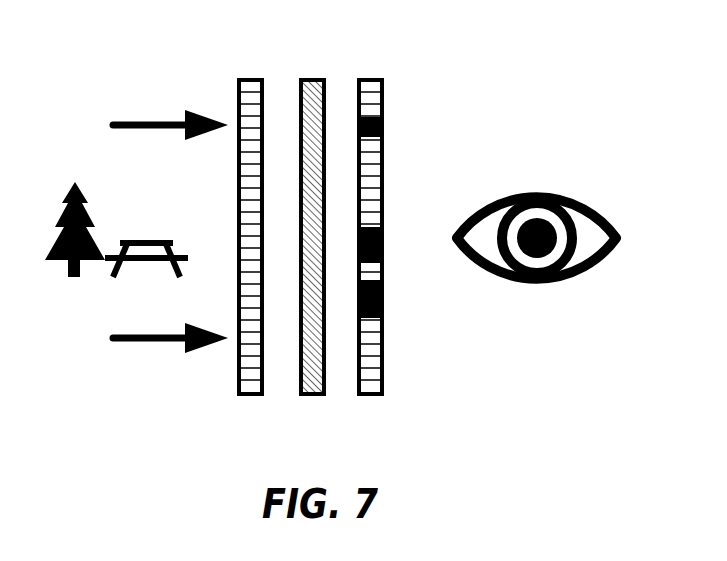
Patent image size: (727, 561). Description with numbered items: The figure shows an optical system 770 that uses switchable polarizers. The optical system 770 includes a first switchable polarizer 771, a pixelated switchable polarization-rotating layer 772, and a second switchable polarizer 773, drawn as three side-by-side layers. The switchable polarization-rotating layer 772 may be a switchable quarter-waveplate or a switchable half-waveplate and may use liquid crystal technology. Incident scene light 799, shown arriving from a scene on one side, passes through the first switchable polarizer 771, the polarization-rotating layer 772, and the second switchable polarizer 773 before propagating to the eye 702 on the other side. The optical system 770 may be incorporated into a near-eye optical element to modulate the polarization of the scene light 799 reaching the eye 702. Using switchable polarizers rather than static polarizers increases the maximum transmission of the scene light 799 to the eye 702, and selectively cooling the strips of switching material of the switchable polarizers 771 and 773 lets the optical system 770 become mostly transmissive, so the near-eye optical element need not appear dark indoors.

The optical system 770 is at (454, 83).
The first switchable polarizer 771 is at (251, 78).
The pixelated switchable polarization-rotating layer 772 is at (314, 78).
The second switchable polarizer 773 is at (378, 78).
The scene light 799 is at (148, 231).
The eye 702 is at (574, 200).